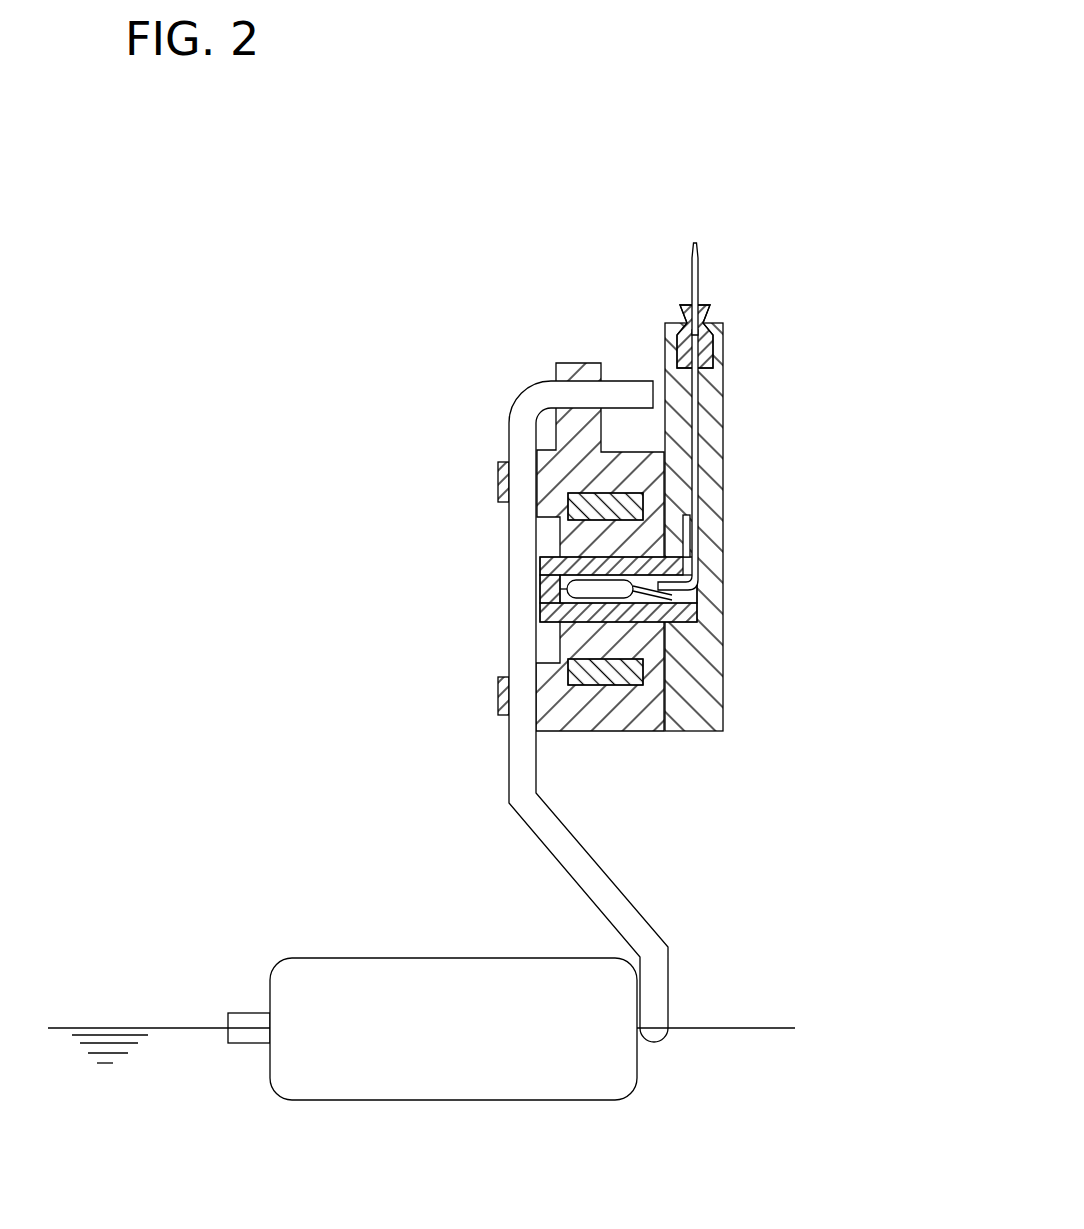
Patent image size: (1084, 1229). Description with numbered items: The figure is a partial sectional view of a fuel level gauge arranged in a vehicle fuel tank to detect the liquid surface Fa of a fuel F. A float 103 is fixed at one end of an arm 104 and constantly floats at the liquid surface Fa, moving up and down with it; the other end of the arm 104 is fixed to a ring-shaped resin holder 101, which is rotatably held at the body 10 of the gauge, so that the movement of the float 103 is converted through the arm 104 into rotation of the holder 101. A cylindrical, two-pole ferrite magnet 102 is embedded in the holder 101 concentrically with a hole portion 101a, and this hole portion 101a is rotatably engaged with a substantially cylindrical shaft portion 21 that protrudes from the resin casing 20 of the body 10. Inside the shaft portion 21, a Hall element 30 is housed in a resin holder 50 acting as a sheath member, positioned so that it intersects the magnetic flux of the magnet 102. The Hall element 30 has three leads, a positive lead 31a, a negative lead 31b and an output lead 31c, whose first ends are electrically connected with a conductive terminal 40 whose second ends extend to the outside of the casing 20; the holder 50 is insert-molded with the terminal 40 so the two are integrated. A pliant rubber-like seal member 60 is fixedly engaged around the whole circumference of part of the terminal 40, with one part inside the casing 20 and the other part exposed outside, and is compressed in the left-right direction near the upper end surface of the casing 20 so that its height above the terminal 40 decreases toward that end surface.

The body 10 is at (660, 511).
The casing 20 is at (729, 462).
The shaft portion 21 is at (562, 634).
The Hall element 30 is at (660, 597).
The positive lead 31a is at (665, 617).
The negative lead 31b is at (665, 617).
The output lead 31c is at (610, 592).
The terminal 40 is at (698, 273).
The holder 50 is at (665, 555).
The seal member 60 is at (711, 314).
The holder 101 is at (607, 573).
The hole portion 101a is at (592, 564).
The magnet 102 is at (632, 676).
The float 103 is at (302, 957).
The arm 104 is at (512, 806).
The fuel F is at (170, 1077).
The liquid surface Fa is at (108, 1028).